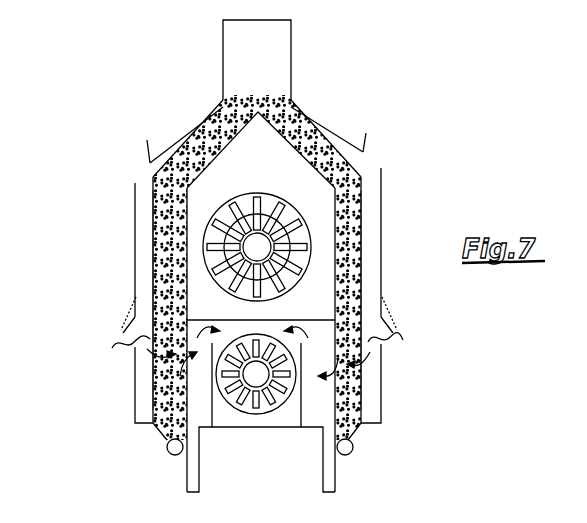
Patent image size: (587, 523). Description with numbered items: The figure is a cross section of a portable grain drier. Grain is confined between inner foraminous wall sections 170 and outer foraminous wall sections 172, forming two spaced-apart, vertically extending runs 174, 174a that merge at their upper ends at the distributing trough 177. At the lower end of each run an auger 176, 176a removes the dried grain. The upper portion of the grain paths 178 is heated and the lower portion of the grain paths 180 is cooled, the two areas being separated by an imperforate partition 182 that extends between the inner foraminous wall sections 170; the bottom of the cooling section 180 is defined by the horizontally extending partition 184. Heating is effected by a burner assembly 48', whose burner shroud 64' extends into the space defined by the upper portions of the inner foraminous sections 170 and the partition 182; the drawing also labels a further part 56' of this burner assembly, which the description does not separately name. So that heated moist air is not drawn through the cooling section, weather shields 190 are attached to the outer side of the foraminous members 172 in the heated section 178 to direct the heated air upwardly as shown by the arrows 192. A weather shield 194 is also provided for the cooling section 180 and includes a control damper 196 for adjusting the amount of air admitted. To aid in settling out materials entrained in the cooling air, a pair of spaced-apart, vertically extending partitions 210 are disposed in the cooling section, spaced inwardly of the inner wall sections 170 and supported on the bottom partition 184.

The distributing trough 177 is at (262, 97).
The upper portion of the grain paths 178 is at (323, 200).
The arrows 192 is at (147, 198).
The burner assembly 48' is at (257, 229).
The rotor hub ring 56' is at (263, 220).
The burner shroud 64' is at (249, 255).
The vertically extending run 174 is at (163, 222).
The vertically extending run 174a is at (352, 233).
The weather shields 190 is at (137, 258).
The inner foraminous wall sections 170 is at (178, 286).
The outer foraminous wall sections 172 is at (145, 271).
The control damper 196 is at (126, 326).
The weather shield 194 is at (135, 380).
The imperforate partition 182 is at (283, 319).
The partitions 210 is at (212, 400).
The horizontally extending partition 184 is at (238, 427).
The lower portion of the grain paths 180 is at (283, 415).
The auger 176 is at (168, 453).
The auger 176a is at (353, 445).